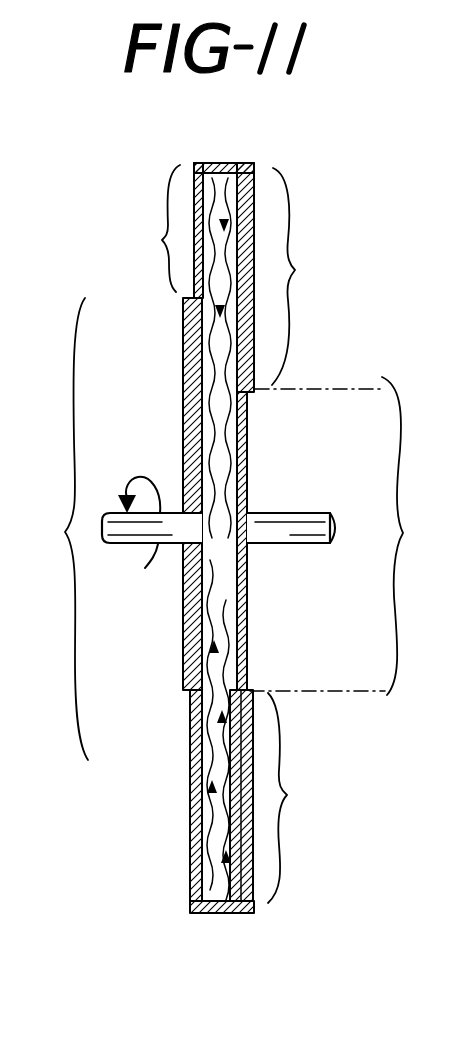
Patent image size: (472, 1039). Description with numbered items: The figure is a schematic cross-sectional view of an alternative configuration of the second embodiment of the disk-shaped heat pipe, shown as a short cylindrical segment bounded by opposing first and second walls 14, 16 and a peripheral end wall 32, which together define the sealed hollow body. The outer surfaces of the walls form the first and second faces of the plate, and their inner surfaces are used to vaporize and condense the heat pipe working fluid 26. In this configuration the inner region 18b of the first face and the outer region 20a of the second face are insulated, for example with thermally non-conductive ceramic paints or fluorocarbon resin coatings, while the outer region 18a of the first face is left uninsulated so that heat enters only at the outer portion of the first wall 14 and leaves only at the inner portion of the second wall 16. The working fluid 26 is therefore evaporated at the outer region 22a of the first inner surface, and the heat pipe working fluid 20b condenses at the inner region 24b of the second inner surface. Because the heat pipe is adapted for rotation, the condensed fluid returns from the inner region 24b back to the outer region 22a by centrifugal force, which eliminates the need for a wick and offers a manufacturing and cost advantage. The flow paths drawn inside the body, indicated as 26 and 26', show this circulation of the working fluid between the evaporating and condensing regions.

The first wall 14 is at (192, 790).
The second wall 16 is at (246, 652).
The upper section 18a is at (146, 228).
The inner region of the first face 18b is at (51, 529).
The outer region of the second face 20a is at (309, 535).
The heat pipe working fluid 20b is at (352, 536).
The outer region of the first inner surface 22a is at (261, 210).
The inner region of the second inner surface 24b is at (178, 545).
The heat pipe working fluid 26 is at (227, 730).
The flow path (downward) 26' is at (186, 419).
The peripheral end wall 32 is at (208, 167).